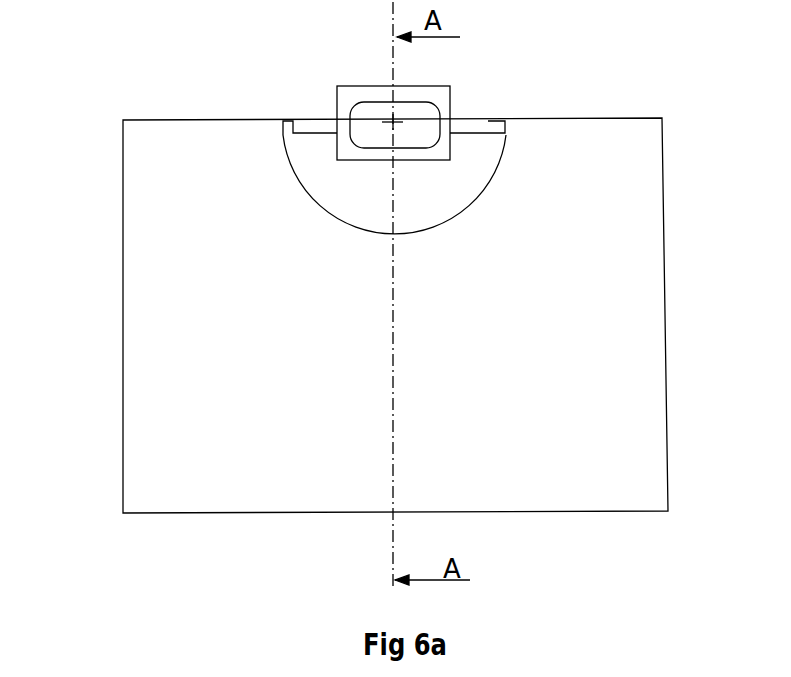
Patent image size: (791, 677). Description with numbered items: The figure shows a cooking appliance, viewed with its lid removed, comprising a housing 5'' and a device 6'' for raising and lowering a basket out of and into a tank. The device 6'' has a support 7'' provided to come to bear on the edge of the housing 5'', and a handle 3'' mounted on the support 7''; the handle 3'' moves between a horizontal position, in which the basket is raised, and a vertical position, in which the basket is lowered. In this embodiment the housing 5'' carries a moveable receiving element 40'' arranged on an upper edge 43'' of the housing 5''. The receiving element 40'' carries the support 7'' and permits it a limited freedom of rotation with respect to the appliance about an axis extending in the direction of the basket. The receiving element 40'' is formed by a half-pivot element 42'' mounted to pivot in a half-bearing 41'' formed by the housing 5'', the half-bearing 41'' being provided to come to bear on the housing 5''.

The handle 3'' is at (499, 110).
The housing 5'' is at (347, 315).
The device for raising and lowering the basket 6'' is at (449, 78).
The support 7'' is at (328, 93).
The moveable receiving element 40'' is at (183, 278).
The half-bearing 41'' is at (511, 241).
The half-pivot element 42'' is at (516, 205).
The upper edge 43'' is at (277, 402).